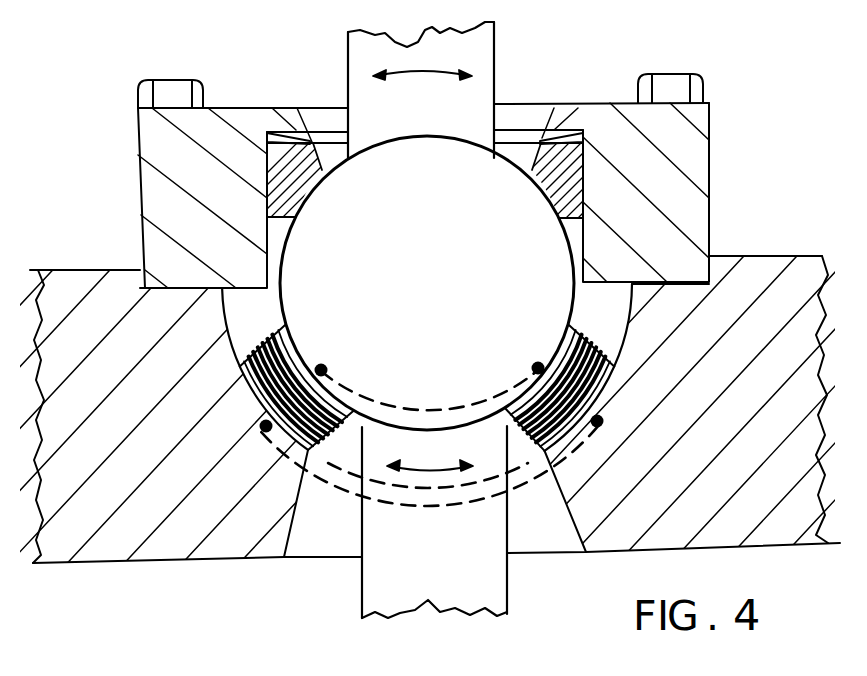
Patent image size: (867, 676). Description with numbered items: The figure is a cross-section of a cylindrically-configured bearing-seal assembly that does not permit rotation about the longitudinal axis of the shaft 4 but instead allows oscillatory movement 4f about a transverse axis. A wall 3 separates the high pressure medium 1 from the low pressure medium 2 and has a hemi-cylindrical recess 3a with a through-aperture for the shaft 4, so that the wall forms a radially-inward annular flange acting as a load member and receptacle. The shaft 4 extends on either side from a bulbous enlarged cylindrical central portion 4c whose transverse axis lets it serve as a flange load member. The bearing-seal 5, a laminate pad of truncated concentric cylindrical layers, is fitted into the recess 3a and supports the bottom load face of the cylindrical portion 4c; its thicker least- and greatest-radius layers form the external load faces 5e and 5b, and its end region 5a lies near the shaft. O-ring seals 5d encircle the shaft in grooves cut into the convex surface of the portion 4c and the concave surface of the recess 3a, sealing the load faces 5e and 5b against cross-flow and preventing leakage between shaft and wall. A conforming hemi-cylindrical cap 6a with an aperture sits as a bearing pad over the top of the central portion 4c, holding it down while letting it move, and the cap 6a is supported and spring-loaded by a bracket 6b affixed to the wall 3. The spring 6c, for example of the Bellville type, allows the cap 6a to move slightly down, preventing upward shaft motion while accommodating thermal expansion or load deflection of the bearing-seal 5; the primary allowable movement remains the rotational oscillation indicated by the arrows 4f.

The high pressure medium 1 is at (95, 66).
The low pressure medium 2 is at (180, 618).
The wall 3 is at (146, 498).
The hemi-cylindrical recess 3a is at (626, 349).
The shaft 4 is at (430, 125).
The bulbous enlarged cylindrical central portion 4c is at (398, 275).
The oscillatory movement 4f is at (423, 257).
The bearing-seal 5 is at (617, 387).
The end of spring ring 5a is at (256, 354).
The external load face 5b is at (246, 393).
The O-ring seals 5d is at (327, 370).
The external load face 5e is at (297, 347).
The hemi-cylindrical cap 6a is at (583, 172).
The bracket 6b is at (245, 108).
The spring 6c is at (548, 133).